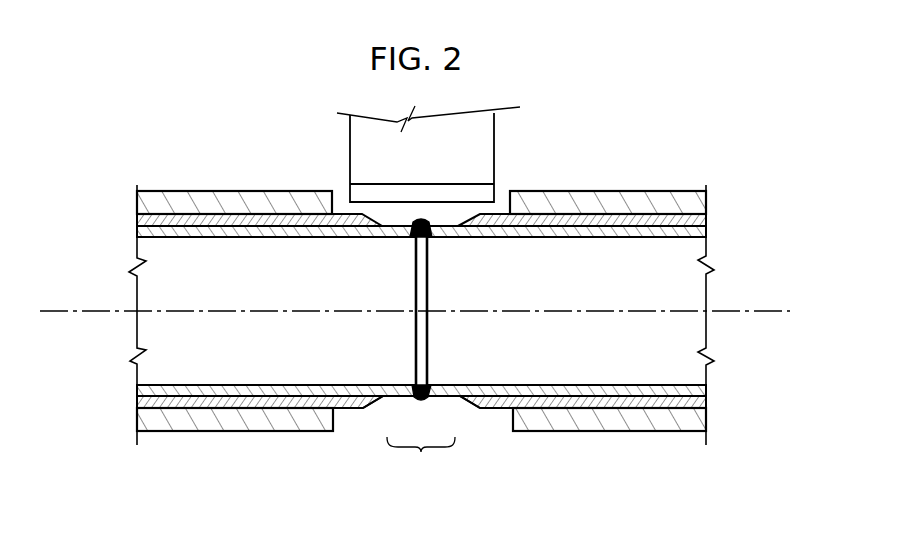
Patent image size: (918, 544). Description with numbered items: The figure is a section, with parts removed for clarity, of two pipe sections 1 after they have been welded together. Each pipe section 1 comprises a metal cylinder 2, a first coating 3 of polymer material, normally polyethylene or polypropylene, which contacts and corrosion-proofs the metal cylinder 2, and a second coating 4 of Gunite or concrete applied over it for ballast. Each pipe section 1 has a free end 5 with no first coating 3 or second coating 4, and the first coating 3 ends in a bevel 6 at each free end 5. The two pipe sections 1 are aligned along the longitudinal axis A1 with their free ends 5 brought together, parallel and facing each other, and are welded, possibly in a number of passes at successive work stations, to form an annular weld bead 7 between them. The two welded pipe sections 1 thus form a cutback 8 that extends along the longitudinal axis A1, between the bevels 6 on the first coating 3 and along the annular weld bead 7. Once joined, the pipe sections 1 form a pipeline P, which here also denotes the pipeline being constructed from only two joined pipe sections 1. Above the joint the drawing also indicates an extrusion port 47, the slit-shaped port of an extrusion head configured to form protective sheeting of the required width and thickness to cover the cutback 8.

The pipe section 1 is at (172, 158).
The metal cylinder 2 is at (262, 238).
The first coating 3 is at (137, 222).
The second coating 4 is at (277, 191).
The free end 5 is at (396, 248).
The bevel 6 is at (377, 408).
The annular weld bead 7 is at (419, 399).
The cutback 8 is at (418, 457).
The extrusion port 47 is at (455, 210).
The pipeline P is at (581, 124).
The longitudinal axis A1 is at (40, 312).